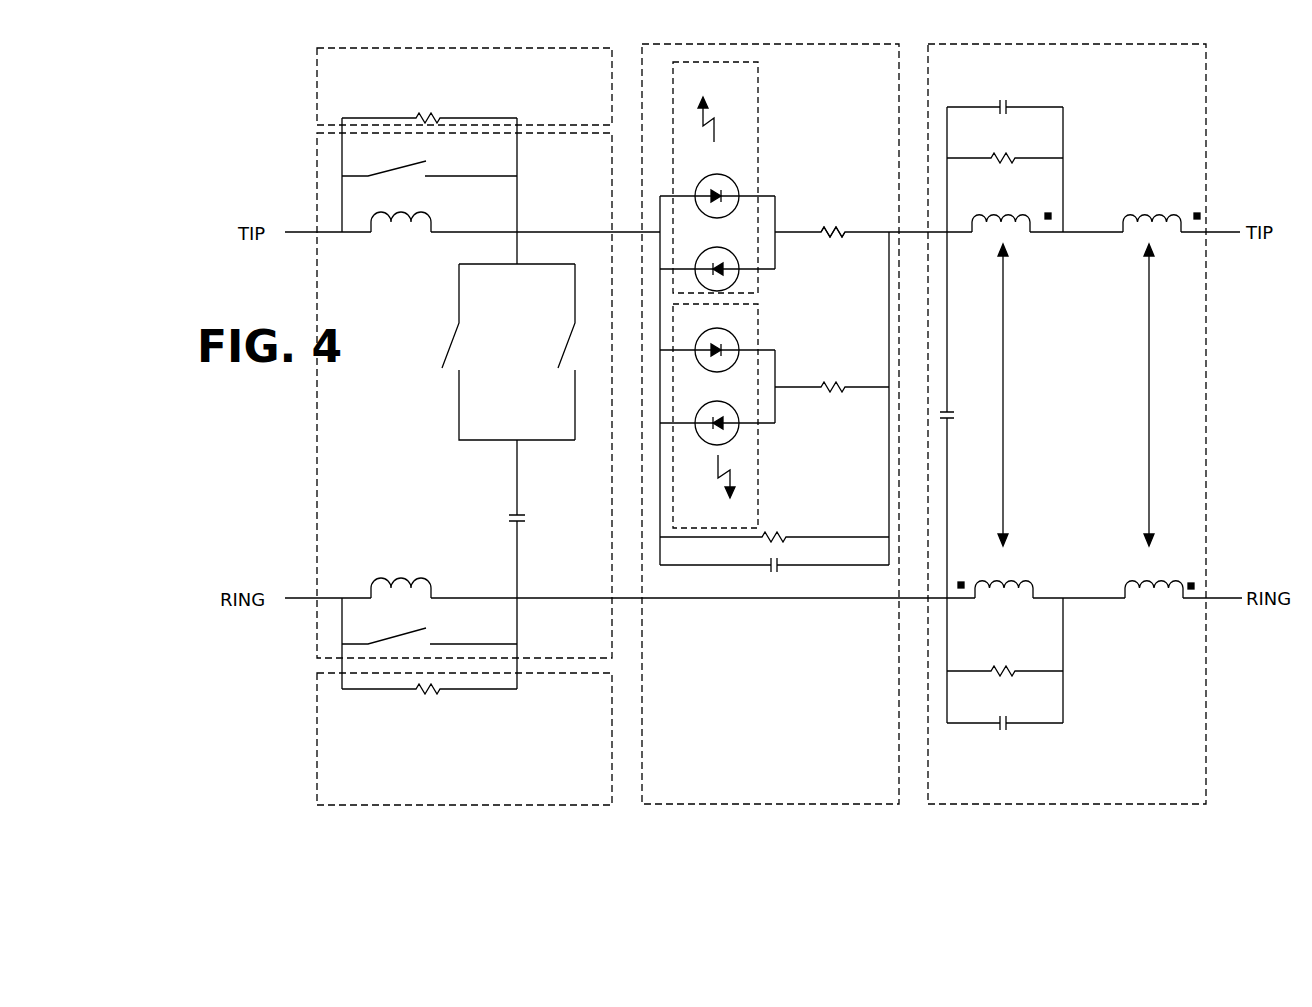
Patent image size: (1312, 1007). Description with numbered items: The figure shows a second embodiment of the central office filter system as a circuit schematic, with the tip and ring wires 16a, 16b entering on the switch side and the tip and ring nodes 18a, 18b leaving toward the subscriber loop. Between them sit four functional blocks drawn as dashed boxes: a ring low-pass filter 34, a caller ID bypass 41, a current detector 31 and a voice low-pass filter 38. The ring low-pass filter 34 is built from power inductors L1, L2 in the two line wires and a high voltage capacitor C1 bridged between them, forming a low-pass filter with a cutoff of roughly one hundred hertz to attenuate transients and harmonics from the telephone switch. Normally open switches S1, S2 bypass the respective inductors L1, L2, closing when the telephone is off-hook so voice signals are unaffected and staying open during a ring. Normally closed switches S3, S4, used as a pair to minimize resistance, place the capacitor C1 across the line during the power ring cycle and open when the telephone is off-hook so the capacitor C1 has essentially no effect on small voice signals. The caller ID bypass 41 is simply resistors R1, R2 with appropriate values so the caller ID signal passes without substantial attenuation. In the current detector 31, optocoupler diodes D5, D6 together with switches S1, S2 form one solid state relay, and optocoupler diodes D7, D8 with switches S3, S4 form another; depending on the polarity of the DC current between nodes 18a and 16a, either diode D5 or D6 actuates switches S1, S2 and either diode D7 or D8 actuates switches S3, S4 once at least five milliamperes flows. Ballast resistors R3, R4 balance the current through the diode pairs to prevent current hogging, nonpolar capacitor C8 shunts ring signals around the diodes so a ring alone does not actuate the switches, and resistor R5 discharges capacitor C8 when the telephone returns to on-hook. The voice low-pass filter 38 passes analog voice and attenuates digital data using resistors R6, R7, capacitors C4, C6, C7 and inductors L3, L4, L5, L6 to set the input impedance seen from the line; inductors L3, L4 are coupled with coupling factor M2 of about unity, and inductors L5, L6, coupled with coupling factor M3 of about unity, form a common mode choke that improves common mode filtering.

The wire of connection 16 (tip) 16a is at (300, 236).
The wire of connection 16 (ring) 16b is at (300, 598).
The node of connection 18 (tip) 18a is at (1212, 232).
The node of connection 18 (ring) 18b is at (1220, 595).
The current detector 31 is at (770, 424).
The ring low-pass filter 34 is at (464, 403).
The voice low-pass filter 38 is at (1067, 424).
The caller ID bypass 41 is at (464, 426).
The resistor R1 is at (429, 108).
The resistor R2 is at (429, 700).
The ballast resistor R3 is at (833, 222).
The ballast resistor R4 is at (832, 377).
The resistor R5 is at (774, 524).
The resistor R6 is at (1005, 143).
The resistor R7 is at (1005, 657).
The high voltage capacitor C1 is at (534, 542).
The capacitor C4 is at (964, 416).
The capacitor C6 is at (1005, 92).
The capacitor C7 is at (1005, 710).
The nonpolar capacitor C8 is at (774, 576).
The power inductor L1 is at (401, 210).
The power inductor L2 is at (401, 575).
The inductor L3 is at (1011, 209).
The inductor L4 is at (995, 577).
The inductor L5 is at (1161, 206).
The inductor L6 is at (1159, 577).
The switch S1 is at (429, 161).
The switch S2 is at (429, 628).
The switch S3 is at (499, 352).
The switch S4 is at (558, 352).
The optocoupler diode D5 is at (717, 183).
The optocoupler diode D6 is at (717, 256).
The optocoupler diode D7 is at (717, 337).
The optocoupler diode D8 is at (717, 410).
The coupling factor M2 is at (1019, 395).
The coupling factor M3 is at (1164, 395).